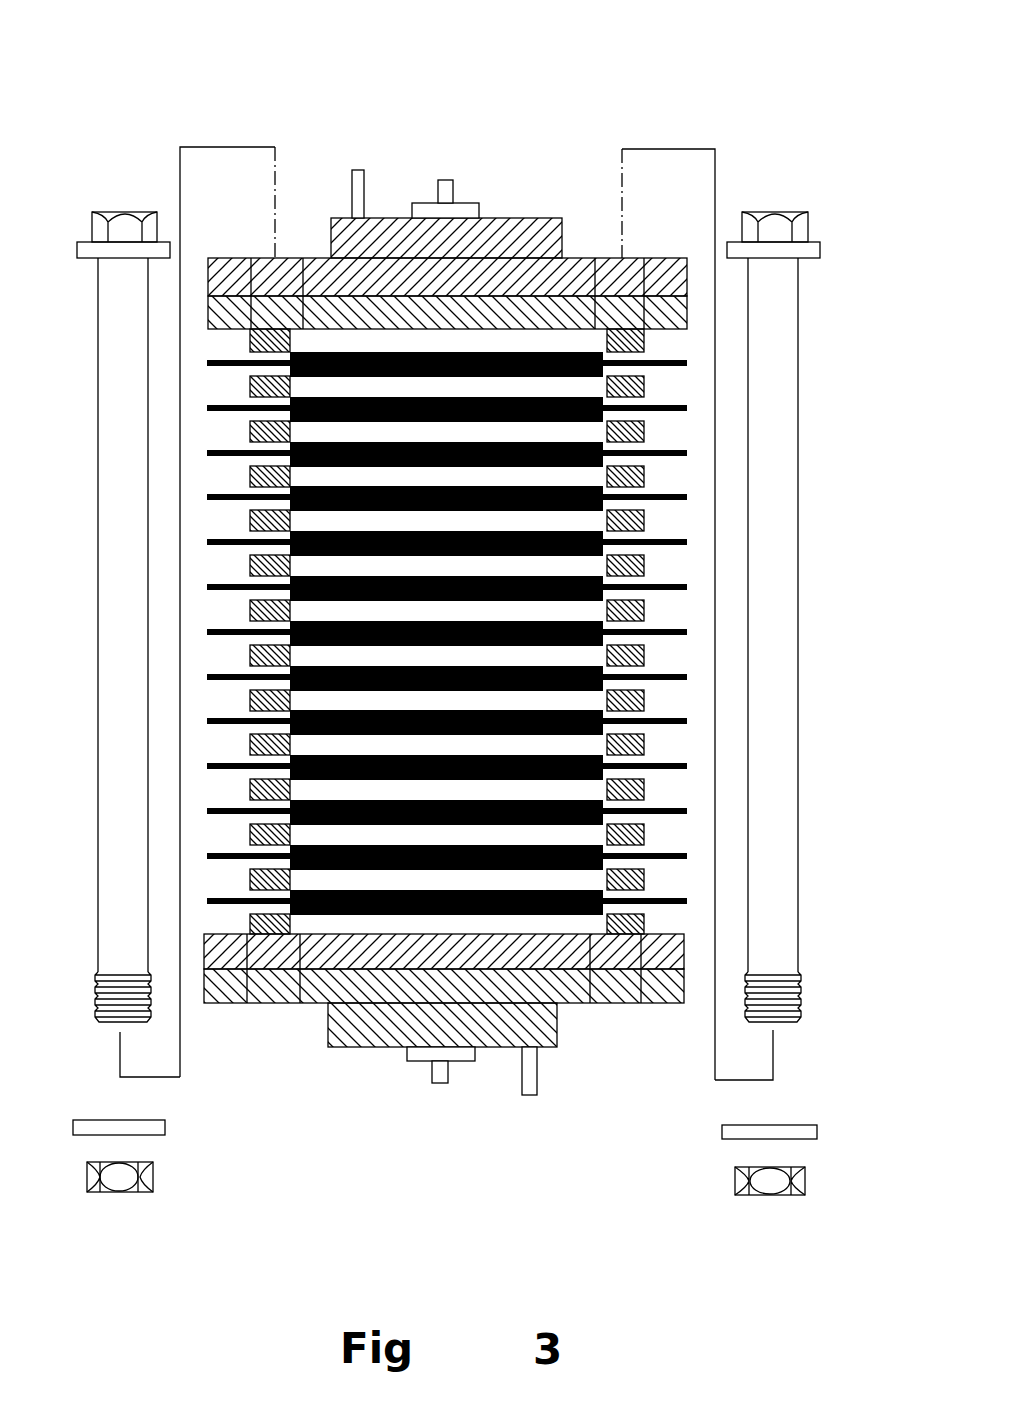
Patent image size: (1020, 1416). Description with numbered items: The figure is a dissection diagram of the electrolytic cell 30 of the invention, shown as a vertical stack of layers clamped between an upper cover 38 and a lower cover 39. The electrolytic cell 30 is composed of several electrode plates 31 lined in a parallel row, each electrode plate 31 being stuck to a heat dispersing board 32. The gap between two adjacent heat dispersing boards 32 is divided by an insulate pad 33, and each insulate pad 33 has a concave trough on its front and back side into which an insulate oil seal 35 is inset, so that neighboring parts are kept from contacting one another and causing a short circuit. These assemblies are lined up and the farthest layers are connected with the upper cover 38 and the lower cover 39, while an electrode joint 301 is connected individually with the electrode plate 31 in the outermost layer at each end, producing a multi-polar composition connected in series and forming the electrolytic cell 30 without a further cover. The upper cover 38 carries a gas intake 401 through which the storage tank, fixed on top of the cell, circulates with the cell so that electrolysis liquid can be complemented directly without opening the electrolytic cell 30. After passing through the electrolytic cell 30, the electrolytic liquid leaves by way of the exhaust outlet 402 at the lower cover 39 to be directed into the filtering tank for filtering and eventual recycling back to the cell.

The electrolytic cell 30 is at (257, 1062).
The electrode plate 31 is at (510, 360).
The heat dispersing board 32 is at (687, 367).
The insulate pad 33 is at (647, 342).
The insulate oil seal 35 is at (645, 438).
The upper cover 38 is at (590, 285).
The lower cover 39 is at (568, 985).
The electrode joint 301 is at (448, 181).
The gas intake 401 is at (366, 168).
The exhaust outlet 402 is at (527, 1097).